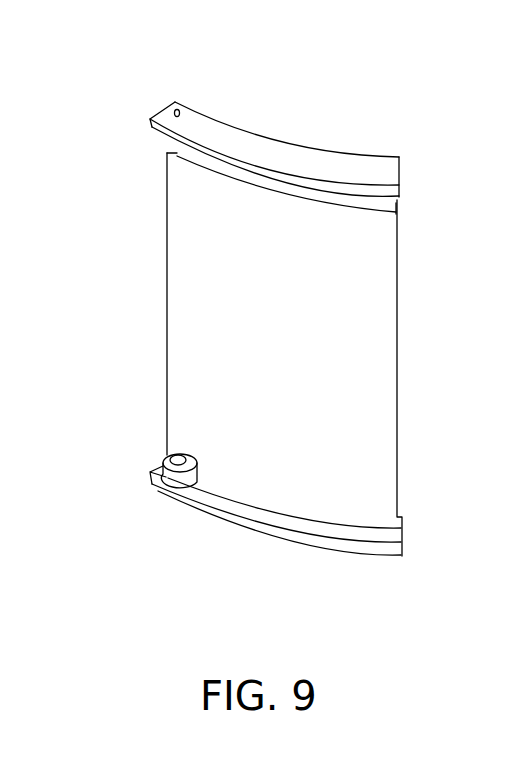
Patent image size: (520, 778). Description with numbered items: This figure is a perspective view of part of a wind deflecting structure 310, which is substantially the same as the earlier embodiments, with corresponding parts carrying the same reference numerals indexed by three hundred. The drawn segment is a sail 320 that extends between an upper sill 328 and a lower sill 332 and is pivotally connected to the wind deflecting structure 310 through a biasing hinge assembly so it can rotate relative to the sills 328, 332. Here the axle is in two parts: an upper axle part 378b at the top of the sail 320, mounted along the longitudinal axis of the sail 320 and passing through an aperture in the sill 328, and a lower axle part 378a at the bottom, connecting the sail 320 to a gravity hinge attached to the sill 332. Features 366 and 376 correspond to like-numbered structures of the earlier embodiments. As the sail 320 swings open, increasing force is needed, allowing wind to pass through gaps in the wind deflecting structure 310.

The wind deflecting structure 310 is at (276, 340).
The sail 320 is at (373, 376).
The sill 328 is at (290, 158).
The sill 332 is at (182, 496).
The mounting tab 366 is at (187, 98).
The boss 376 is at (152, 478).
The axle part 378a is at (172, 456).
The axle part 378b is at (173, 145).